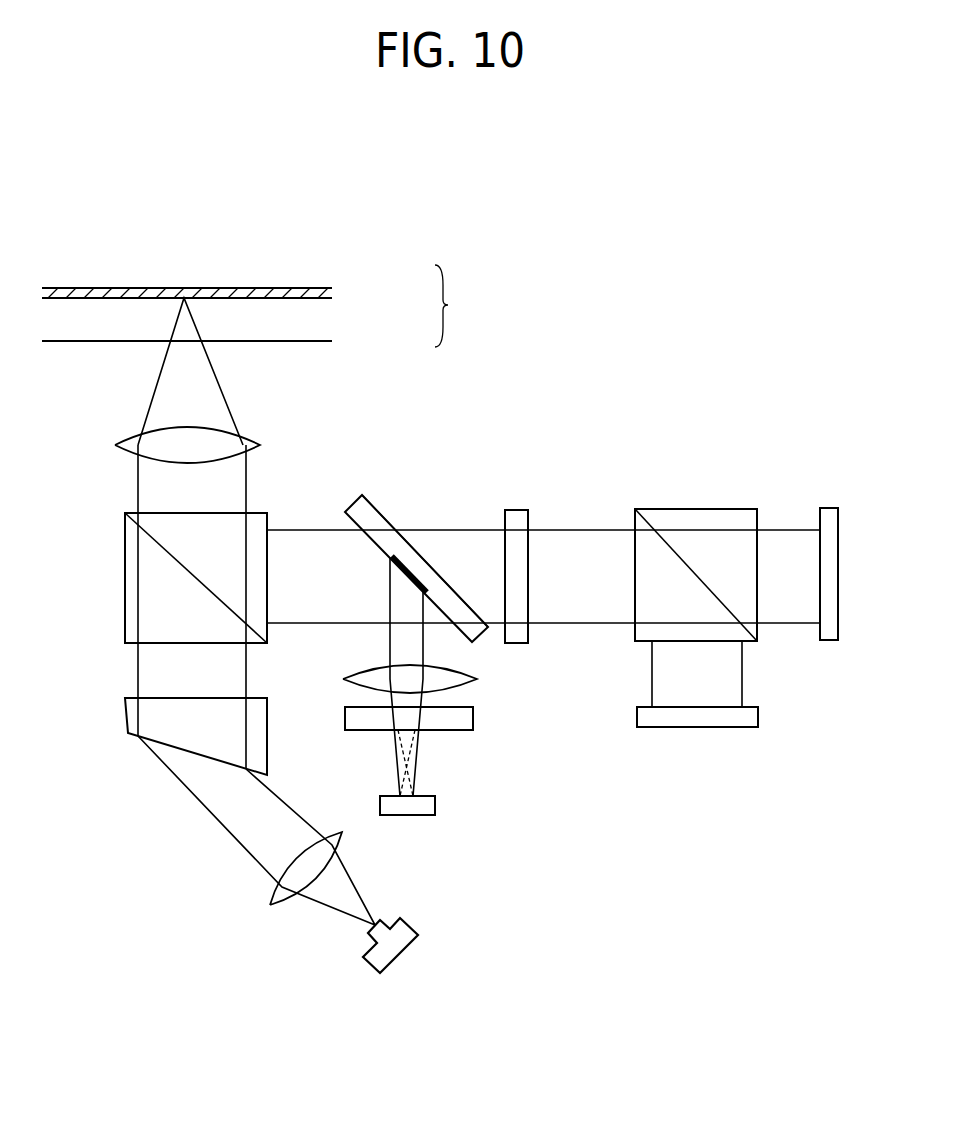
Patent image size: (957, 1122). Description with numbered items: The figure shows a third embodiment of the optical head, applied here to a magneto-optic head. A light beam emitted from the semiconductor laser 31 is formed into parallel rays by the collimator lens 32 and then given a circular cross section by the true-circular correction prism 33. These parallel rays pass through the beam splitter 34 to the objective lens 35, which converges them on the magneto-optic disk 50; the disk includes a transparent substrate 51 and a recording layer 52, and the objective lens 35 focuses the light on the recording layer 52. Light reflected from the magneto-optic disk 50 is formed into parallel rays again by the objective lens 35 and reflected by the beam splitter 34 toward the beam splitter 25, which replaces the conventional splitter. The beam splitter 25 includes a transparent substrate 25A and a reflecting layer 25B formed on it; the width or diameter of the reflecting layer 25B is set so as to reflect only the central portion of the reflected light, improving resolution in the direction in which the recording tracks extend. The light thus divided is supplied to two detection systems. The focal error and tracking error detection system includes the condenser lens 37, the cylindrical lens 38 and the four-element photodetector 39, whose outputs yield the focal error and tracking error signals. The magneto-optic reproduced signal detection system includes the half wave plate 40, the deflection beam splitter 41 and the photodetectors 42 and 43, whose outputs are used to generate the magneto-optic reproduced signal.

The magneto-optic disk 50 is at (465, 306).
The transparent substrate 51 is at (327, 323).
The recording layer 52 is at (333, 293).
The objective lens 35 is at (250, 435).
The beam splitter 34 is at (125, 538).
The true-circular correction prism 33 is at (125, 711).
The collimator lens 32 is at (273, 892).
The semiconductor laser 31 is at (418, 937).
The beam splitter 25 is at (364, 495).
The transparent substrate 25A is at (370, 520).
The reflecting layer 25B is at (405, 577).
The ½ wave plate 40 is at (528, 515).
The deflection beam splitter 41 is at (698, 509).
The photodetector 42 is at (758, 712).
The photodetector 43 is at (840, 515).
The condenser lens 37 is at (475, 673).
The cylindrical lens 38 is at (473, 718).
The 4-element photodetector 39 is at (435, 803).